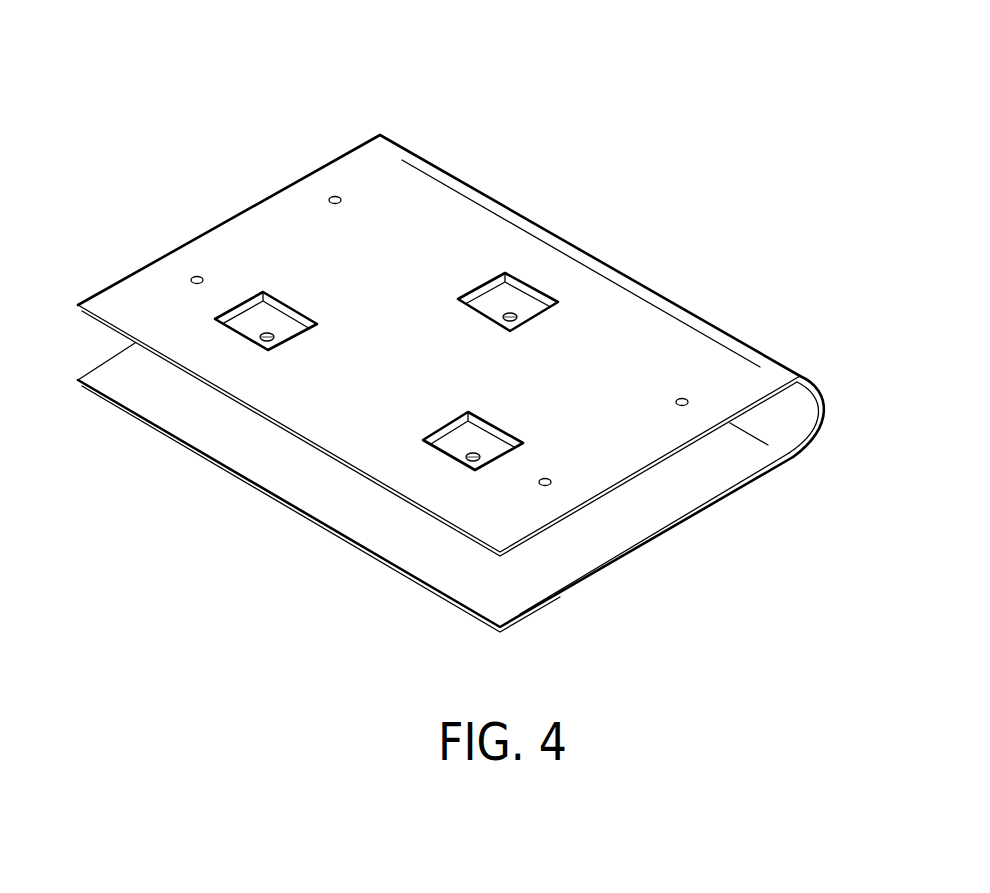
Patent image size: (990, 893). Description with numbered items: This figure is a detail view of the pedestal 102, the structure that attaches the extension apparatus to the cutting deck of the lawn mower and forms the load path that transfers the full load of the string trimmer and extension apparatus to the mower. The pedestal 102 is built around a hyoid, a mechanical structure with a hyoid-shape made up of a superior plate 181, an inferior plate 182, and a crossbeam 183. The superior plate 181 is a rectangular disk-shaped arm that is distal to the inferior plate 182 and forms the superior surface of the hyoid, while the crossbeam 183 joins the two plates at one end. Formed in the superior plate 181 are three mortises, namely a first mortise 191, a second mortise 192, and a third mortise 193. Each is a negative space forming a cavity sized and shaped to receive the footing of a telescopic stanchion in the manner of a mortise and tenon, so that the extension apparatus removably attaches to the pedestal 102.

The pedestal 102 is at (225, 157).
The superior plate 181 is at (660, 367).
The inferior plate 182 is at (633, 533).
The crossbeam 183 is at (807, 402).
The first mortise 191 is at (508, 430).
The second mortise 192 is at (528, 285).
The third mortise 193 is at (252, 322).